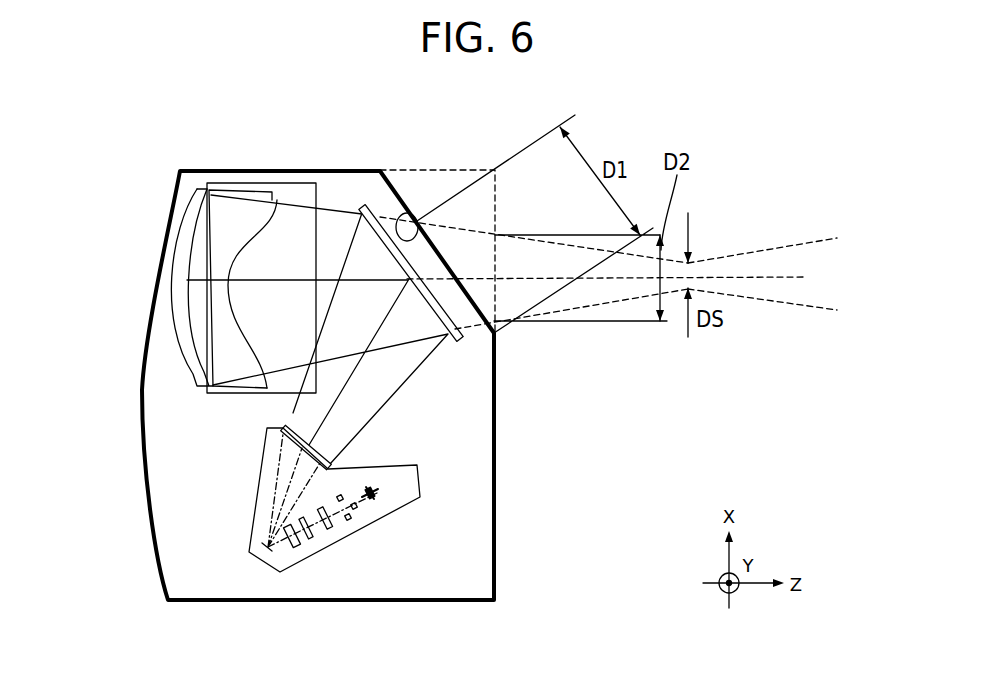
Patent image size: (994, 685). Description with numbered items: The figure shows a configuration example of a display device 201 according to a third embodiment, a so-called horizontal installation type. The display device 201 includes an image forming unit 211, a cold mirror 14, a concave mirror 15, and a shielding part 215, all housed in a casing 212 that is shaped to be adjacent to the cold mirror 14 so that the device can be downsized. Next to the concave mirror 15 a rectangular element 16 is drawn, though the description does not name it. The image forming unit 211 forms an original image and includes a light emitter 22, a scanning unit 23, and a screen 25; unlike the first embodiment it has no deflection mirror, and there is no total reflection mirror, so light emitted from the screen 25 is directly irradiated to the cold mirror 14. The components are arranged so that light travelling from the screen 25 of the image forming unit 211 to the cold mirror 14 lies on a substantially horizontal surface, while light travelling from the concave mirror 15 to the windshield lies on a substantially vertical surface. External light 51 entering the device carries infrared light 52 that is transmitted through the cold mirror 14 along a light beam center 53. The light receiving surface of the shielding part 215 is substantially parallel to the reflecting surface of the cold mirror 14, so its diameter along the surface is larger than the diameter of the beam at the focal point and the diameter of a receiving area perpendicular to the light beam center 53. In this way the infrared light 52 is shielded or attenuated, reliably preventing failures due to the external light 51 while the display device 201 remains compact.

The display device 201 is at (314, 118).
The casing 212 is at (496, 543).
The concave mirror 15 is at (188, 212).
The display panel holder 16 is at (243, 183).
The external light 51 is at (277, 200).
The cold mirror 14 is at (362, 205).
The shielding part 215 is at (398, 218).
The infrared light 52 is at (468, 226).
The light beam center 53 is at (780, 273).
The screen 25 is at (295, 422).
The image forming unit 211 is at (372, 545).
The light emitter 22 is at (324, 545).
The scanning unit 23 is at (263, 560).